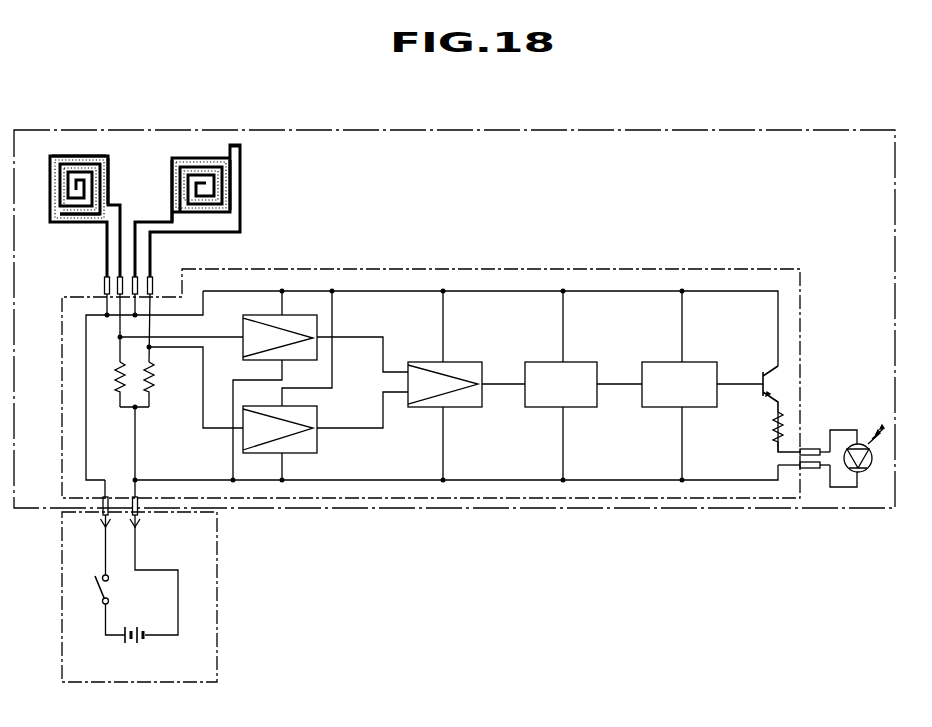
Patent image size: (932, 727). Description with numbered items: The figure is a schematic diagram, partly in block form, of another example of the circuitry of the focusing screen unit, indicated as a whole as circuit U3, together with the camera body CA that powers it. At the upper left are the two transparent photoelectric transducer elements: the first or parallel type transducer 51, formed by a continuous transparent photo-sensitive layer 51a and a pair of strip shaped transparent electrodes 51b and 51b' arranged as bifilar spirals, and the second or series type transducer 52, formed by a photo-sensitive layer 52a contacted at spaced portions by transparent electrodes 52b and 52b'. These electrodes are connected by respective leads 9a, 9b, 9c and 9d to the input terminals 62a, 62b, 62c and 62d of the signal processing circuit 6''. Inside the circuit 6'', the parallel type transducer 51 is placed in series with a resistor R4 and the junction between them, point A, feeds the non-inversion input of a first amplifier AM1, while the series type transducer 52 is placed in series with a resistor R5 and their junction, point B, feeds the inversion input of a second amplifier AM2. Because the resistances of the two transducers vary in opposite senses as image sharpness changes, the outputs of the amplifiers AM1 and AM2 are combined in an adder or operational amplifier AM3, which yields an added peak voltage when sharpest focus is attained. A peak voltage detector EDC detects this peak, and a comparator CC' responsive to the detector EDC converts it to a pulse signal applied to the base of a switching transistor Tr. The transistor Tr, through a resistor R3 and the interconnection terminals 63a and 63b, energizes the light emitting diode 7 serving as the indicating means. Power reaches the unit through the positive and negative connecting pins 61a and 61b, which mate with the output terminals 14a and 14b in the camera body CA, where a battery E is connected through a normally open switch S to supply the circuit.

The circuit U3 is at (888, 112).
The electrical circuit for processing the transducer outputs 6'' is at (431, 354).
The first transparent photoelectric transducer element 51 is at (50, 156).
The transparent photo-sensitive layer 51a is at (108, 186).
The strip shaped transparent electrode 51b is at (101, 151).
The strip shaped transparent electrode 51b' is at (65, 234).
The second transparent photoelectric transducer element 52 is at (248, 176).
The transparent photo-sensitive layer 52a is at (231, 195).
The transparent electrode 52b is at (200, 212).
The transparent electrode 52b' is at (272, 168).
The lead 9a is at (107, 250).
The lead 9b is at (120, 272).
The lead 9c is at (135, 250).
The lead 9d is at (150, 272).
The input terminal 62a is at (104, 287).
The input terminal 62b is at (117, 295).
The input terminal 62c is at (137, 295).
The input terminal 62d is at (152, 290).
The point A is at (120, 337).
The point B is at (149, 347).
The resistor R4 is at (117, 378).
The resistor R5 is at (152, 378).
The first amplifier AM1 is at (303, 318).
The second amplifier AM2 is at (303, 442).
The adder or operational amplifier AM3 is at (468, 372).
The peak voltage detector EDC is at (533, 398).
The comparator CC' is at (675, 356).
The switching transistor Tr is at (762, 379).
The resistor R3 is at (776, 432).
The interconnection terminal 63a is at (812, 448).
The interconnection terminal 63b is at (813, 469).
The light emitting diode 7 is at (868, 460).
The camera body CA is at (222, 587).
The positive power supply input terminal or connecting pin 61a is at (103, 508).
The negative power supply input terminal or connecting pin 61b is at (138, 508).
The output terminal 14a is at (105, 535).
The output terminal 14b is at (136, 535).
The normally open switch S is at (97, 585).
The electrical power source or battery E is at (134, 652).